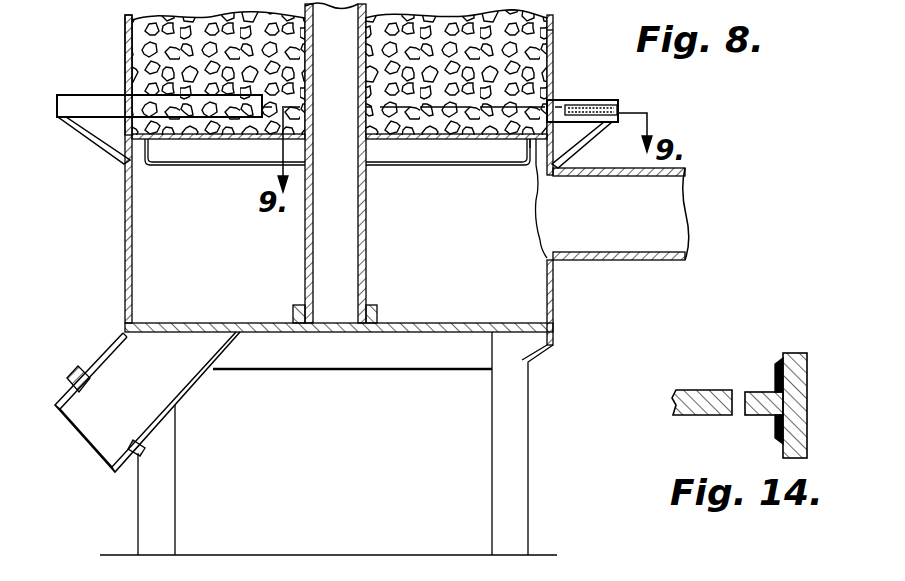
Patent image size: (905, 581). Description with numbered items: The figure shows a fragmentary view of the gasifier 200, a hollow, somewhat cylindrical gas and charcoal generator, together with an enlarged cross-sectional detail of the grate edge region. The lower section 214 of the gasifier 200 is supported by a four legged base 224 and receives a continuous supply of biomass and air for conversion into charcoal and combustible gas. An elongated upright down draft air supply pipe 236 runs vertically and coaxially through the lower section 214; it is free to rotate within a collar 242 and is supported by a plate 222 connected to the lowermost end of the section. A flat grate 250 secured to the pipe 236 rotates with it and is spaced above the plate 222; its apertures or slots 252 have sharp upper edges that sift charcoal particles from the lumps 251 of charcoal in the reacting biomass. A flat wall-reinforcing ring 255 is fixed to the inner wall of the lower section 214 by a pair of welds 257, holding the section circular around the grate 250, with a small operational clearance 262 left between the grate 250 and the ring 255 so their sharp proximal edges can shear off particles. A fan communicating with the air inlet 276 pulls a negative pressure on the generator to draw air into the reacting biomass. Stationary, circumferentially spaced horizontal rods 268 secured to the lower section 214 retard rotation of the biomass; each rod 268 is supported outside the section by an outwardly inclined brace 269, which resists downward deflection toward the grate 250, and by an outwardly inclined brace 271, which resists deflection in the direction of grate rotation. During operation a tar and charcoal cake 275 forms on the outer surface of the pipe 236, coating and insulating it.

In FIG. 8, the gasifier 200 is at (110, 222).
In FIG. 8, the lower section 214 is at (128, 35).
In FIG. 14, the lower section 214 is at (800, 400).
In FIG. 8, the plate 222 is at (272, 328).
In FIG. 8, the four legged base 224 is at (396, 370).
In FIG. 8, the down draft air supply pipe 236 is at (305, 265).
In FIG. 8, the collar 242 is at (377, 310).
In FIG. 8, the grate 250 is at (206, 146).
In FIG. 14, the grate 250 is at (685, 380).
In FIG. 8, the lumps 251 is at (551, 38).
In FIG. 8, the apertures or slots 252 is at (425, 142).
In FIG. 8, the wall-reinforcing ring 255 is at (531, 143).
In FIG. 14, the wall-reinforcing ring 255 is at (756, 392).
In FIG. 14, the welds 257 is at (777, 386).
In FIG. 14, the operational clearance 262 is at (738, 410).
In FIG. 8, the rods 268 is at (100, 95).
In FIG. 8, the brace 269 is at (85, 143).
In FIG. 8, the brace 271 is at (600, 105).
In FIG. 8, the tar and charcoal cake 275 is at (339, 73).
In FIG. 8, the air inlet 276 is at (676, 195).